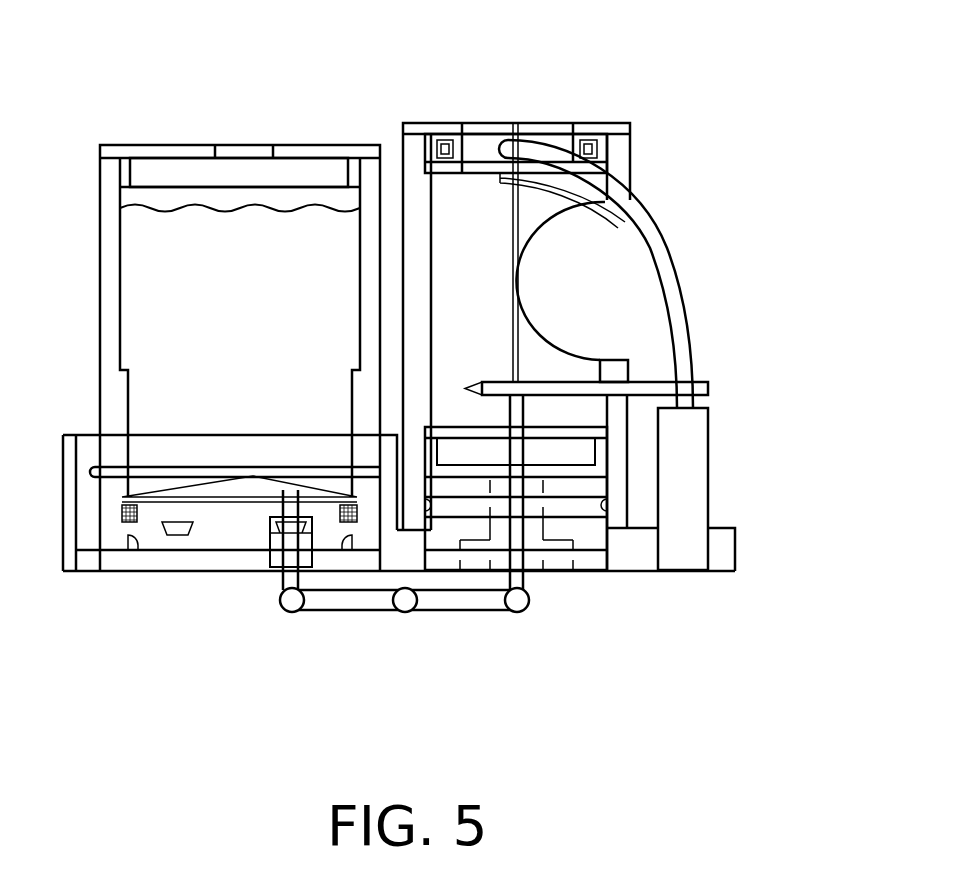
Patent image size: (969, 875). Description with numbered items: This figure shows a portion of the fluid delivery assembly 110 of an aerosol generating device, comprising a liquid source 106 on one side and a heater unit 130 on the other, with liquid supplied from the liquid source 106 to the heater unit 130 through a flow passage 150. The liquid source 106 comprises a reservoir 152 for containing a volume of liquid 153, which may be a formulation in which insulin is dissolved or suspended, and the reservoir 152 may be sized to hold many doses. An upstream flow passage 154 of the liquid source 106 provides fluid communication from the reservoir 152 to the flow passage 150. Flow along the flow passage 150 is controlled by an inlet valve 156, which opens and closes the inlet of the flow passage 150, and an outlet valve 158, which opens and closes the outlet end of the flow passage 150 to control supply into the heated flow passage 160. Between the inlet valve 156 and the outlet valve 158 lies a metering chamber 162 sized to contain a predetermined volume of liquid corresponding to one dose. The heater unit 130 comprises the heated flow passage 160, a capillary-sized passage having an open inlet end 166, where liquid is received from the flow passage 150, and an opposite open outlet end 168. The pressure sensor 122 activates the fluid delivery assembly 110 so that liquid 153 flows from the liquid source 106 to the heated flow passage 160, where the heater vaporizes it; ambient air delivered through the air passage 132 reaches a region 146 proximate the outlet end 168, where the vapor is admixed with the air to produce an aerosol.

The liquid source 106 is at (313, 145).
The fluid delivery assembly 110 is at (750, 166).
The pressure sensor 122 is at (698, 445).
The heater unit 130 is at (622, 122).
The air passage 132 is at (655, 257).
The region 146 is at (516, 123).
The flow passage 150 is at (352, 612).
The reservoir 152 is at (264, 310).
The liquid 153 is at (170, 208).
The upstream flow passage 154 is at (290, 497).
The inlet valve 156 is at (292, 612).
The outlet valve 158 is at (517, 612).
The heated flow passage 160 is at (522, 346).
The metering chamber 162 is at (405, 612).
The inlet end 166 is at (514, 408).
The outlet end 168 is at (506, 150).